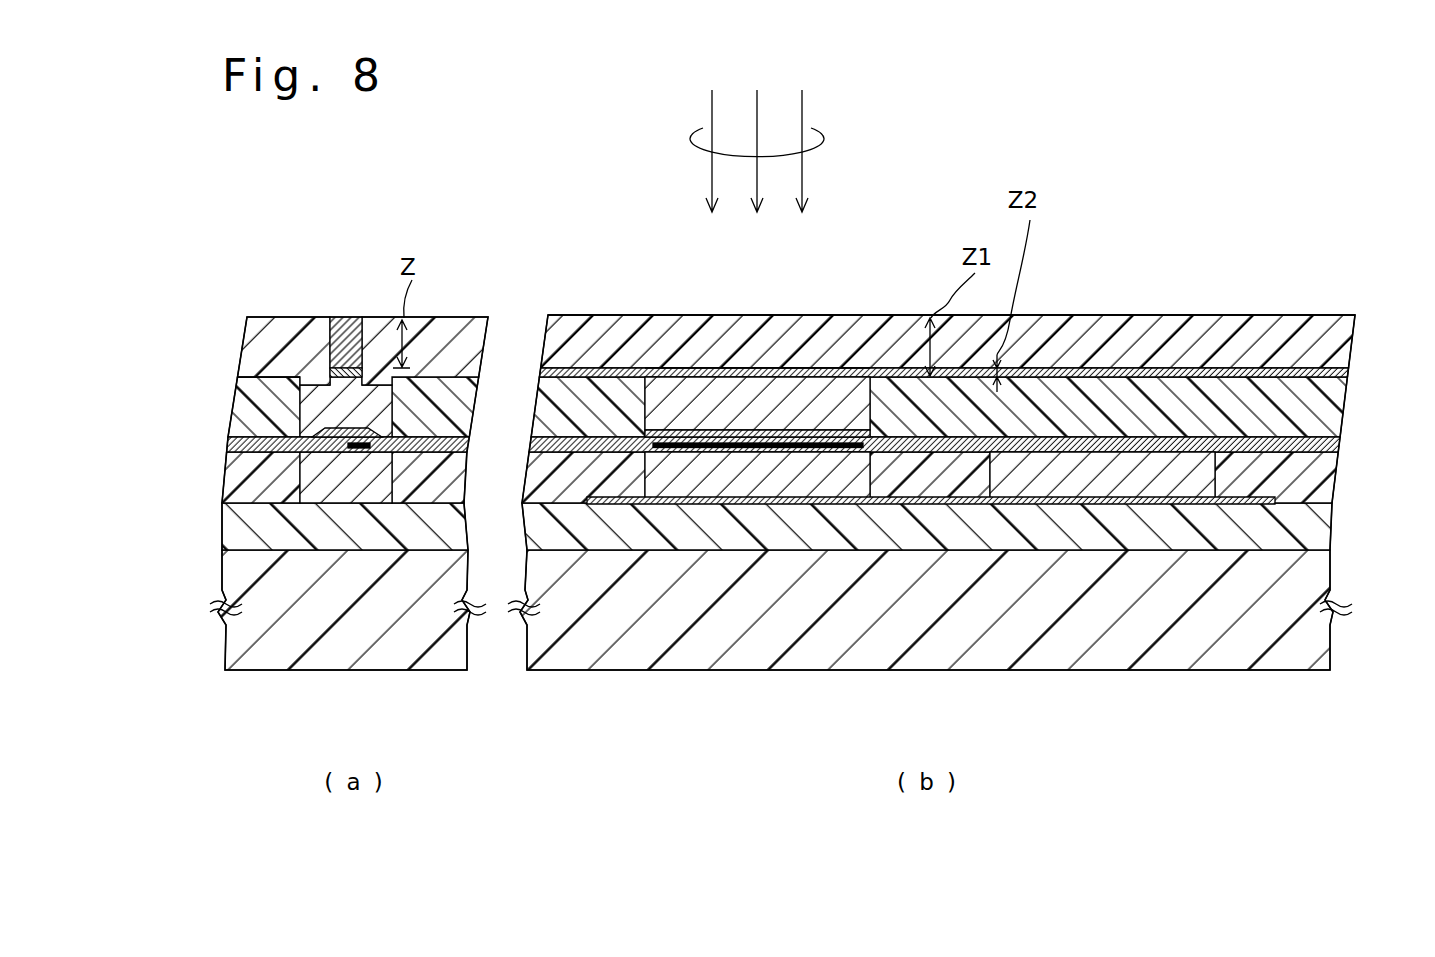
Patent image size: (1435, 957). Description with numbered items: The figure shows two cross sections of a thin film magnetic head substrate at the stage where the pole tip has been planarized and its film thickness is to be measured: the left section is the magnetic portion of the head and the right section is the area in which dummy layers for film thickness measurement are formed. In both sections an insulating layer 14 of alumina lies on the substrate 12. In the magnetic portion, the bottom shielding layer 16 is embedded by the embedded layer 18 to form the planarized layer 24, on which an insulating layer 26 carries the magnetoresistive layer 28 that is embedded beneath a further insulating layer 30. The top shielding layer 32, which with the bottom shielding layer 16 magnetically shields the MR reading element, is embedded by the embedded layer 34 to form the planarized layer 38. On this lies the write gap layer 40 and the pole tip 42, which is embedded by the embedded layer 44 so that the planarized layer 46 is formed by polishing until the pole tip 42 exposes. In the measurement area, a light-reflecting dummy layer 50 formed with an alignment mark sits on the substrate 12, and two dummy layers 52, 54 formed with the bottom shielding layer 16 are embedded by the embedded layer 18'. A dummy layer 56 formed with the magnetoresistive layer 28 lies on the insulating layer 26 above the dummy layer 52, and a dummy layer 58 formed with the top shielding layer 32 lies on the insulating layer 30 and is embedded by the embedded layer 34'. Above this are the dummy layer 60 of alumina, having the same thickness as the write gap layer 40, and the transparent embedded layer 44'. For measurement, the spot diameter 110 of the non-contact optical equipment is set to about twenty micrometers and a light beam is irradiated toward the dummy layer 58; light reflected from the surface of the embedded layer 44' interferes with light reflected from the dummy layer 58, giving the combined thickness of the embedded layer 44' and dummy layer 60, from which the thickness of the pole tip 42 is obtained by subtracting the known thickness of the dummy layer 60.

The substrate 12 is at (226, 640).
The insulating layer 14 is at (221, 520).
The bottom shielding layer 16 is at (357, 448).
The embedded layer 18 is at (702, 371).
The embedded layer 18' is at (797, 587).
The planarized layer 24 is at (1342, 471).
The insulating layer 26 is at (225, 445).
The magnetoresistive layer 28 is at (365, 450).
The insulating layer 30 is at (228, 437).
The top shielding layer 32 is at (305, 380).
The embedded layer 34 is at (269, 315).
The embedded layer 34' is at (1108, 341).
The planarized layer 38 is at (1359, 393).
The write gap layer 40 is at (375, 368).
The pole tip 42 is at (334, 368).
The embedded layer 44 is at (333, 286).
The embedded layer 44' is at (948, 271).
The planarized layer 46 is at (1361, 331).
The dummy layer 50 is at (1166, 503).
The dummy layer 52 is at (777, 440).
The dummy layer 54 is at (1072, 492).
The dummy layer 56 is at (710, 450).
The dummy layer 58 is at (725, 388).
The dummy layer 60 is at (842, 362).
The spot diameter 110 is at (825, 135).